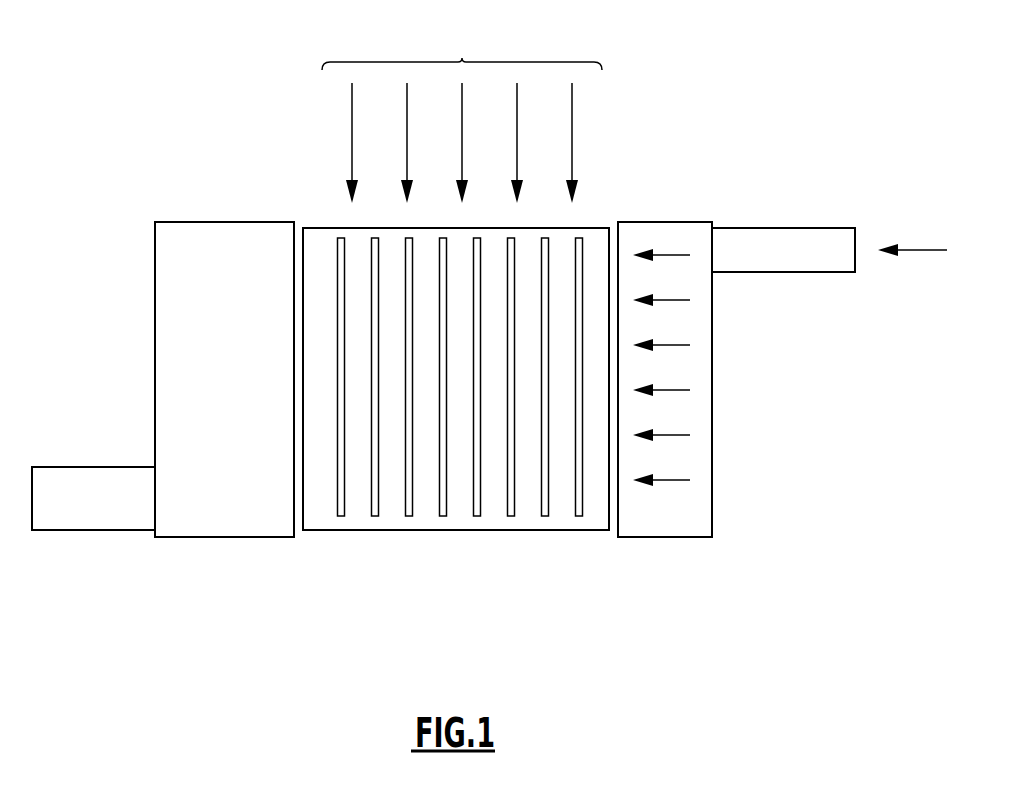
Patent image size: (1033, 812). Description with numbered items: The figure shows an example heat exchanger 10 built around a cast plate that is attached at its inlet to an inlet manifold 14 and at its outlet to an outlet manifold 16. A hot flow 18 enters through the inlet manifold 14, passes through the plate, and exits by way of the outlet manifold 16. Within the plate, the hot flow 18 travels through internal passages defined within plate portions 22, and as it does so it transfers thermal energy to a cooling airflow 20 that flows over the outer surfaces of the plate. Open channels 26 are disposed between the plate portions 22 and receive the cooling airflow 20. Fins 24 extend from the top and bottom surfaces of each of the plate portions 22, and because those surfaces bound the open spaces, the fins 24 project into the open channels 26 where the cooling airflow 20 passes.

The heat exchanger 10 is at (737, 85).
The inlet manifold 14 is at (700, 505).
The outlet manifold 16 is at (178, 360).
The hot flow 18 is at (926, 250).
The cooling airflow 20 is at (462, 60).
The plate portions 22 is at (325, 548).
The fins 24 is at (545, 488).
The open channels 26 is at (592, 207).